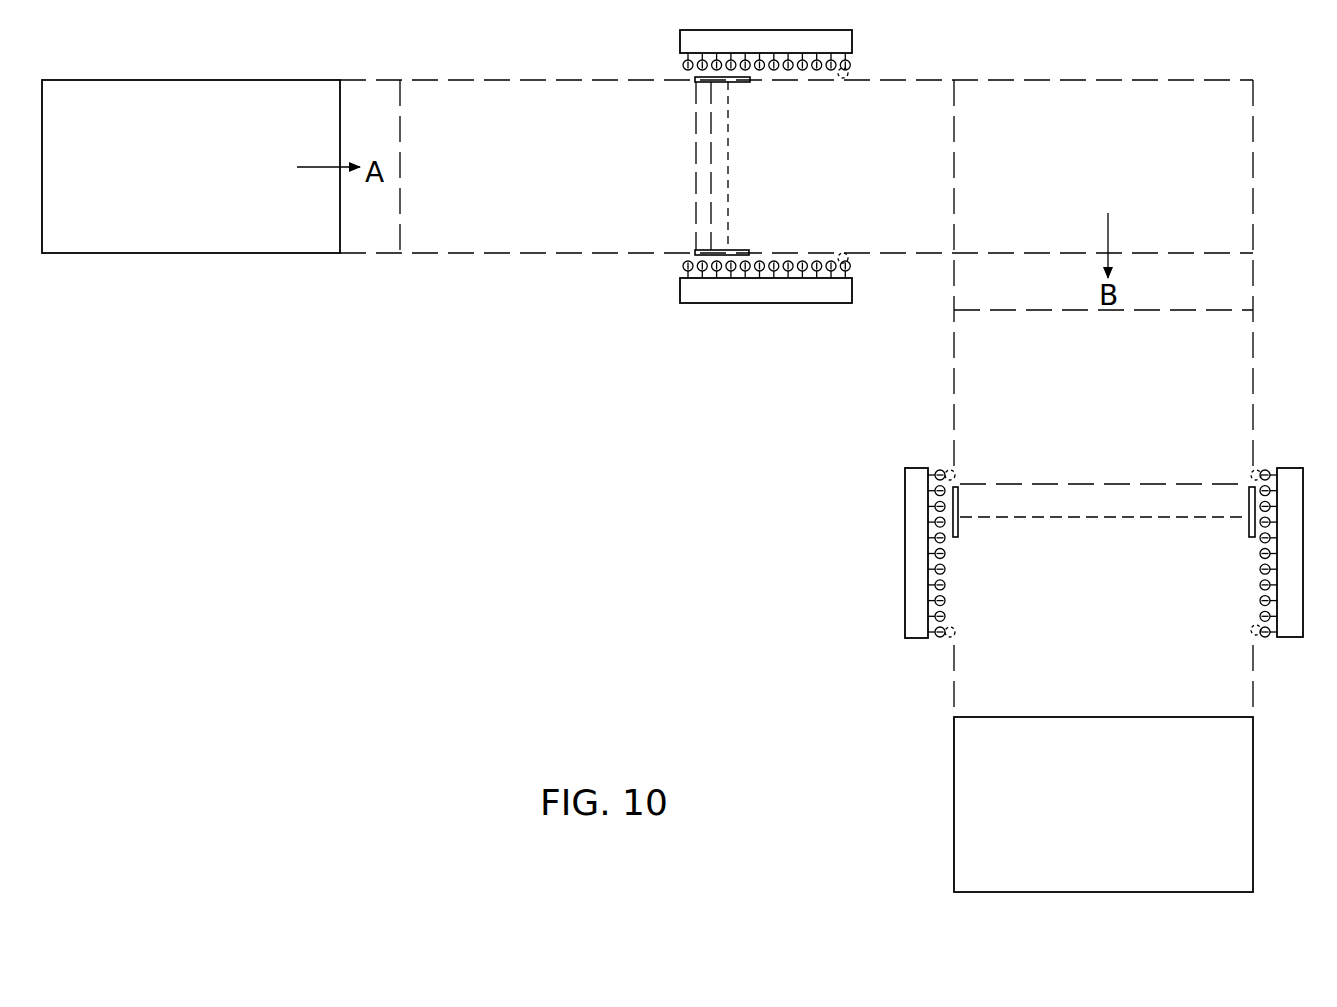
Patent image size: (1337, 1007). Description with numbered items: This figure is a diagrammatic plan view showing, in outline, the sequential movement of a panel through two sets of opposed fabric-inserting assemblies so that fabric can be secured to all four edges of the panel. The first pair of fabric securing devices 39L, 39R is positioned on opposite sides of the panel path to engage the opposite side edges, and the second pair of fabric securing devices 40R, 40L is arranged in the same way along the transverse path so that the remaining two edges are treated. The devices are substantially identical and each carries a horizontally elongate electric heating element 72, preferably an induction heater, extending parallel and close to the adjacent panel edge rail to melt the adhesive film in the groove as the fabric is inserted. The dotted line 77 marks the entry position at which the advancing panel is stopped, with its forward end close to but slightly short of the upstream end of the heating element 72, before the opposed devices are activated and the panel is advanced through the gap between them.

The fabric securing device 39L is at (668, 42).
The fabric securing device 39R is at (705, 308).
The electric heating element 72 is at (743, 83).
The dotted line 77 is at (697, 218).
The fabric securing device 40R is at (920, 465).
The fabric securing device 40L is at (1291, 465).